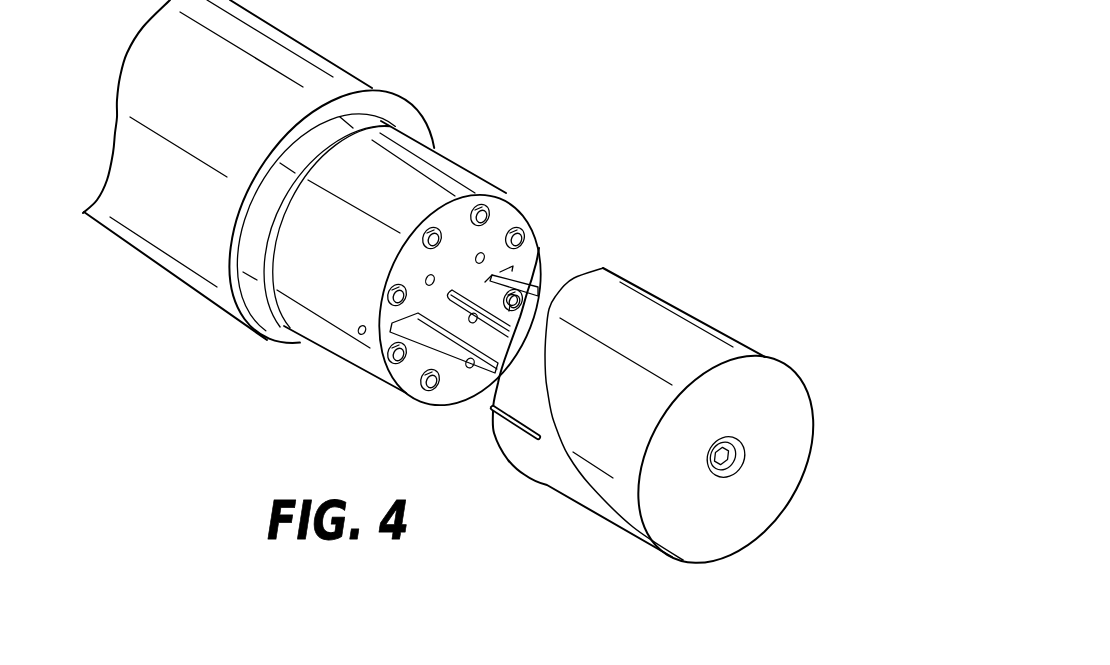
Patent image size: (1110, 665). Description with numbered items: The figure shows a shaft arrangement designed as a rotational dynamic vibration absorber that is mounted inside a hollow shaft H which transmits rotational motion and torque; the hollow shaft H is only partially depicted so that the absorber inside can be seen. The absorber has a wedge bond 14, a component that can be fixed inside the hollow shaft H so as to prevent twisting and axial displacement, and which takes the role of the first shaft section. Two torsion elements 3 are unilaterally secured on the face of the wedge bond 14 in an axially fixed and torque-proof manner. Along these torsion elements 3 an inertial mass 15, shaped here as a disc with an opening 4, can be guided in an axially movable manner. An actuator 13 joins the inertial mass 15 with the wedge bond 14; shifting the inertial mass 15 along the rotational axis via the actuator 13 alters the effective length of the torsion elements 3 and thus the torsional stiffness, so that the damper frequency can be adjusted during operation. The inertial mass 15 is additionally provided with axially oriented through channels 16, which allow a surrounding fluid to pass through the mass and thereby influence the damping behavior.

The hollow shaft H is at (337, 78).
The inertial mass 15 is at (434, 150).
The through channel 16 is at (481, 206).
The opening 4 is at (381, 383).
The actuator 13 is at (491, 280).
The torsion element 3 is at (468, 348).
The wedge bond 14 is at (595, 272).